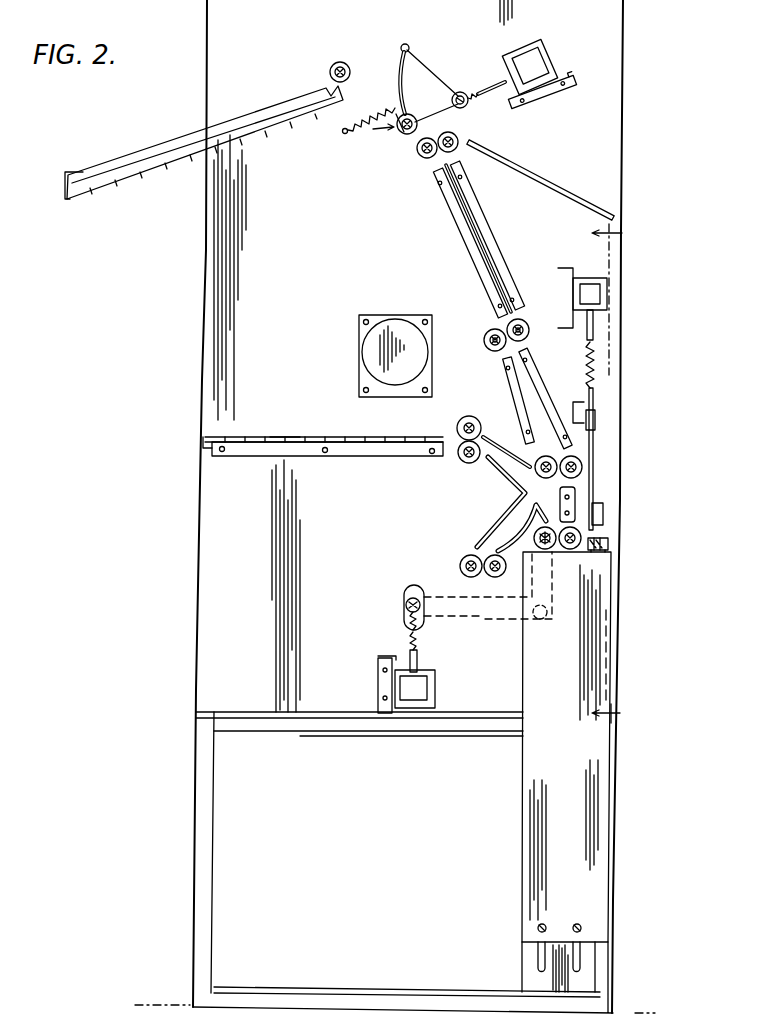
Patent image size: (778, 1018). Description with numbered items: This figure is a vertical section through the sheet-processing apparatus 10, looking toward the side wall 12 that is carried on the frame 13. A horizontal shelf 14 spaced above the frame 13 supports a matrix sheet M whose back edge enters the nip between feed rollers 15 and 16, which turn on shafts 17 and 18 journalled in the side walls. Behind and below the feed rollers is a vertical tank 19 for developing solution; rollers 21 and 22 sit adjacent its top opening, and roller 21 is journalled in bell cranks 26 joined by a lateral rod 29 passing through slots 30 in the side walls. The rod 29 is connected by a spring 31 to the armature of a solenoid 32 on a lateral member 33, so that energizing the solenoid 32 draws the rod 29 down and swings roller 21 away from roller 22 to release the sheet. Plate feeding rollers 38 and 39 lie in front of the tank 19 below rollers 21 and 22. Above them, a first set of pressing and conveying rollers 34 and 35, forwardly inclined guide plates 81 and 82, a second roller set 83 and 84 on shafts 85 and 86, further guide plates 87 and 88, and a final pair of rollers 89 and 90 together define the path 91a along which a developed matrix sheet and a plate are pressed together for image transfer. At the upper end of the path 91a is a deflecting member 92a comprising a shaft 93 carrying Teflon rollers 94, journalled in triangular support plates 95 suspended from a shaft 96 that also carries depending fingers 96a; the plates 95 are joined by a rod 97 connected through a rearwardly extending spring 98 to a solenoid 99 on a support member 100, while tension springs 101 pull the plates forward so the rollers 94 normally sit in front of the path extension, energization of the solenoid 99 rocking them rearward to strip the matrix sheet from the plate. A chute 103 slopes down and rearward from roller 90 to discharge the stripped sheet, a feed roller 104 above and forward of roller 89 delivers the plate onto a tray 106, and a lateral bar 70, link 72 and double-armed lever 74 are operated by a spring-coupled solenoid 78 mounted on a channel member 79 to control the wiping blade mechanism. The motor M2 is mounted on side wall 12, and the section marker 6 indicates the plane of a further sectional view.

The section line 6- 6 is at (593, 473).
The apparatus 10 is at (666, 112).
The side wall 12 is at (208, 378).
The frame 13 is at (200, 853).
The horizontal shelf 14 is at (362, 446).
The feed roller 15 is at (457, 421).
The feed roller 16 is at (461, 459).
The shaft 17 is at (480, 426).
The shaft 18 is at (476, 467).
The vertical tank 19 is at (540, 770).
The roller 21 is at (532, 533).
The roller 22 is at (608, 545).
The bell crank 26 is at (485, 617).
The lateral rod 29 is at (406, 607).
The slot 30 is at (413, 587).
The spring 31 is at (421, 641).
The solenoid 32 is at (432, 690).
The lateral member 33 is at (396, 641).
The pressing and conveying roller 34 is at (522, 448).
The pressing and conveying roller 35 is at (582, 463).
The plate feeding roller 38 is at (463, 553).
The plate feeding roller 39 is at (503, 571).
The lateral bar 70 is at (602, 512).
The link 72 is at (597, 481).
The double-armed lever 74 is at (596, 401).
The solenoid 78 is at (596, 297).
The channel member 79 is at (568, 285).
The guide plate 81 is at (515, 380).
The guide plate 82 is at (543, 389).
The pressing and conveying roller 83 is at (487, 332).
The pressing and conveying roller 84 is at (523, 318).
The shaft 85 is at (487, 347).
The shaft 86 is at (526, 332).
The guide plate 87 is at (458, 228).
The guide plate 88 is at (482, 228).
The pressing and conveying roller 89 is at (418, 157).
The pressing and conveying roller 90 is at (461, 135).
The path 91a is at (493, 287).
The deflecting member 92a is at (373, 130).
The shaft 93 is at (414, 118).
The roller 94 is at (400, 134).
The triangular support plate 95 is at (454, 82).
The shaft 96 is at (408, 46).
The finger 96a is at (410, 98).
The rod 97 is at (463, 92).
The spring 98 is at (485, 93).
The solenoid 99 is at (544, 66).
The support member 100 is at (552, 98).
The tension spring 101 is at (392, 108).
The chute 103 is at (526, 178).
The feed roller 104 is at (357, 55).
The tray 106 is at (135, 172).
The matrix sheet M is at (281, 434).
The motor M2 is at (413, 323).